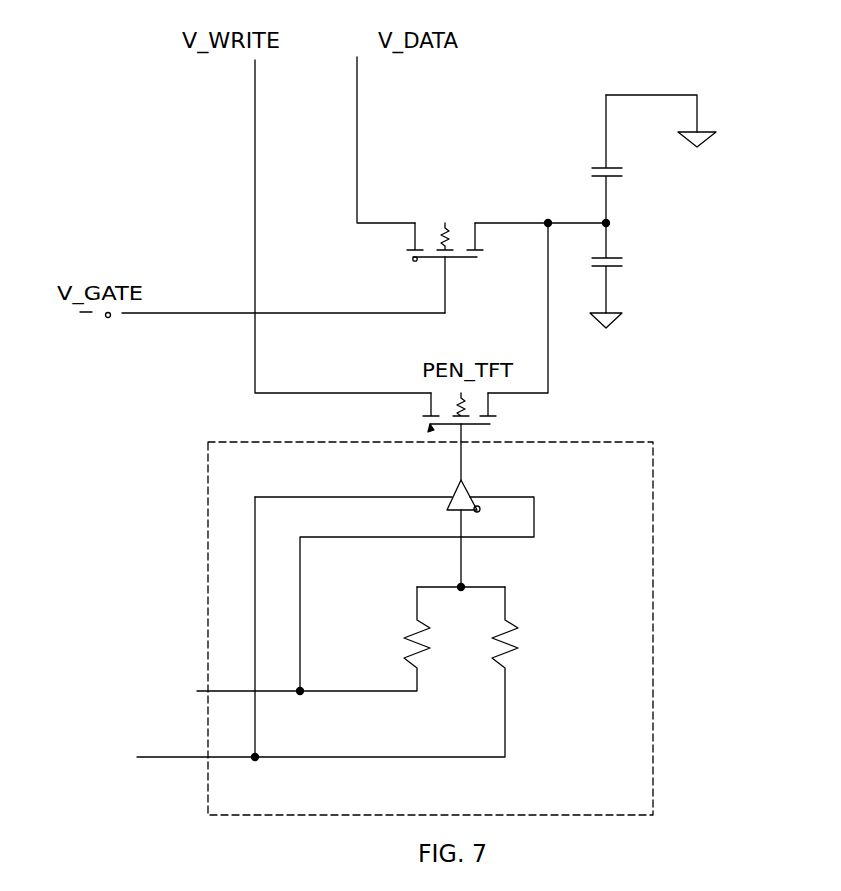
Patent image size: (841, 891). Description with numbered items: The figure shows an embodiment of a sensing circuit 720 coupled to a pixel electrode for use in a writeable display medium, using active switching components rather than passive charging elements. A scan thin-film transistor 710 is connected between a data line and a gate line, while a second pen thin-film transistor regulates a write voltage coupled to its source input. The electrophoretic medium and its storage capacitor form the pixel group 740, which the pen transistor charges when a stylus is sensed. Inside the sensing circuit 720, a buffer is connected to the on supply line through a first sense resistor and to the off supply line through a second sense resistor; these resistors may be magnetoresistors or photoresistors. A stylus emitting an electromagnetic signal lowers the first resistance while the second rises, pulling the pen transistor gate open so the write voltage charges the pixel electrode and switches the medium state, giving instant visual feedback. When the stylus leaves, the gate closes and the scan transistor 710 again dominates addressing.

The scan TFT 710 is at (455, 255).
The sensing circuit 720 is at (605, 761).
The ink and storage capacitor group 740 is at (660, 152).